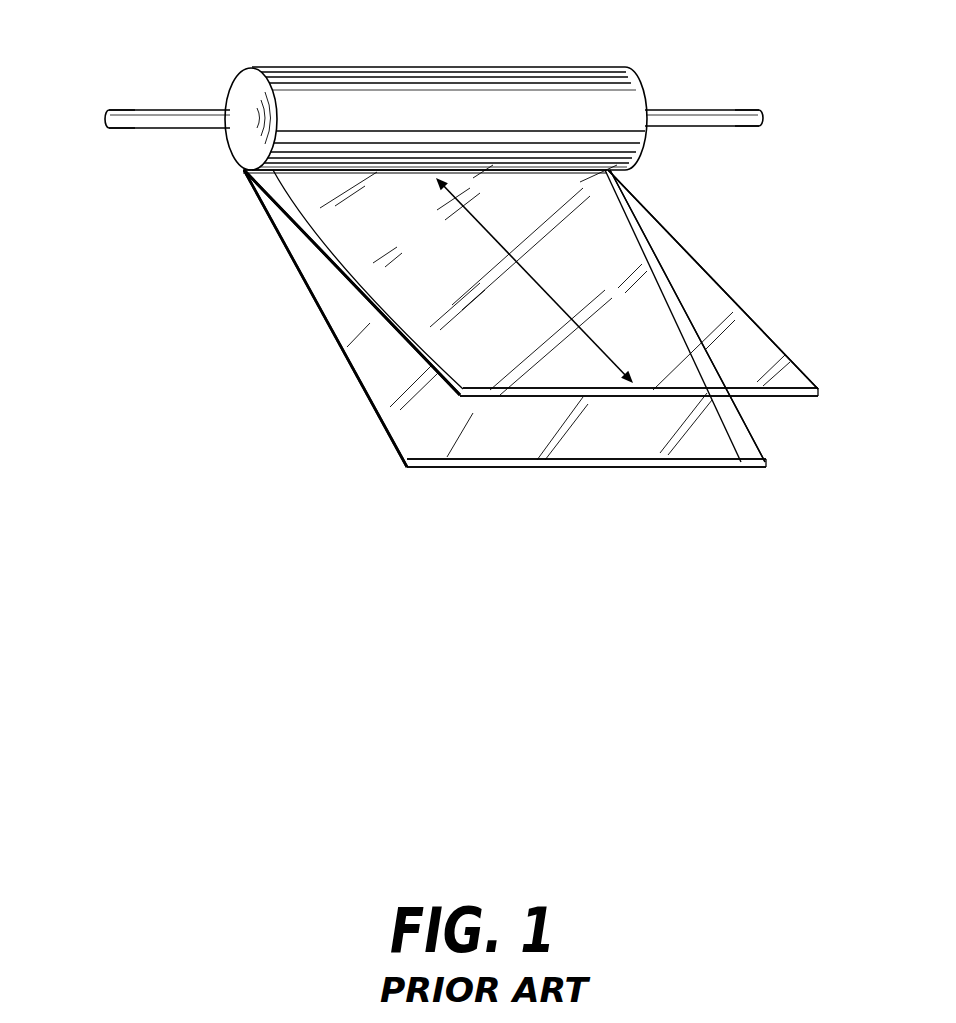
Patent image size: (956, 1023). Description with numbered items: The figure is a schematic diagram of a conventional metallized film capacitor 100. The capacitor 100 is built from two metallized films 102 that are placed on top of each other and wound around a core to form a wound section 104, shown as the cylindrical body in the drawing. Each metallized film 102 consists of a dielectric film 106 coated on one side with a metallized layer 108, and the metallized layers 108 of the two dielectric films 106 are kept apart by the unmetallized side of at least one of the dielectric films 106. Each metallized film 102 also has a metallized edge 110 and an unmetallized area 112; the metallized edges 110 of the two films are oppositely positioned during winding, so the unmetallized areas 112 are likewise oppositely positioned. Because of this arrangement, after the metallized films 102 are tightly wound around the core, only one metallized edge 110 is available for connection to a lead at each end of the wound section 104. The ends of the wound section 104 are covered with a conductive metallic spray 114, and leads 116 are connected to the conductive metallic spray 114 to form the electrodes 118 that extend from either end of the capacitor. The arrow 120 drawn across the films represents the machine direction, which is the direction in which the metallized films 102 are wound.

The metallized film capacitor 100 is at (541, 57).
The metallized film 102 is at (382, 378).
The wound section 104 is at (350, 67).
The dielectric film 106 is at (508, 397).
The metallized layer 108 is at (392, 270).
The metallized edge 110 is at (385, 430).
The unmetallized area 112 is at (395, 309).
The conductive metallic spray 114 is at (240, 148).
The lead 116 is at (150, 110).
The electrode 118 is at (151, 140).
The arrow 120 is at (530, 277).